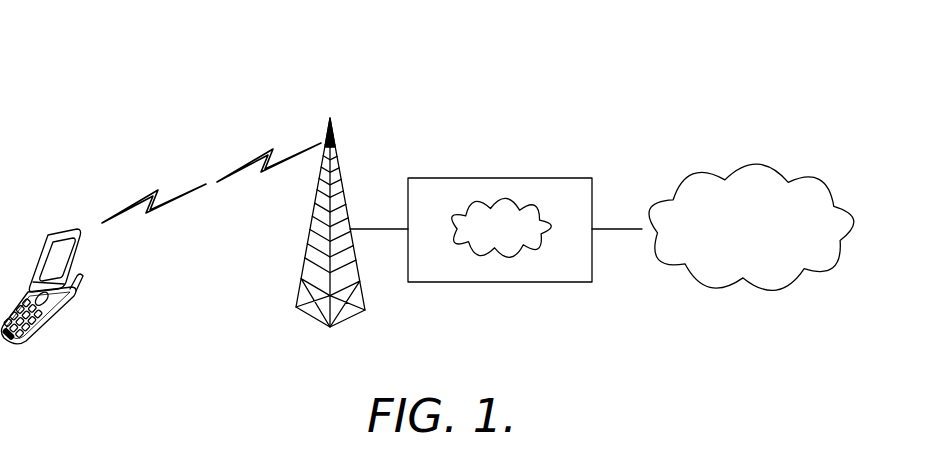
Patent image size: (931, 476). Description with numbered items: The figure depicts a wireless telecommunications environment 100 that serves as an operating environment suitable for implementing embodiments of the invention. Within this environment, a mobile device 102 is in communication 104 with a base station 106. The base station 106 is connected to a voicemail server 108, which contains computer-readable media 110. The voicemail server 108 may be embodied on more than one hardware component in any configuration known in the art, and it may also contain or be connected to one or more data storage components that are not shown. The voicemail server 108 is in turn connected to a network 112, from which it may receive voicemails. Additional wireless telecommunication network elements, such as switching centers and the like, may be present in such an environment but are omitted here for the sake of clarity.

The wireless telecommunications environment 100 is at (153, 40).
The mobile device 102 is at (55, 311).
The communication 104 is at (303, 124).
The base station 106 is at (336, 150).
The voicemail server 108 is at (553, 281).
The computer-readable media 110 is at (503, 198).
The network 112 is at (722, 160).